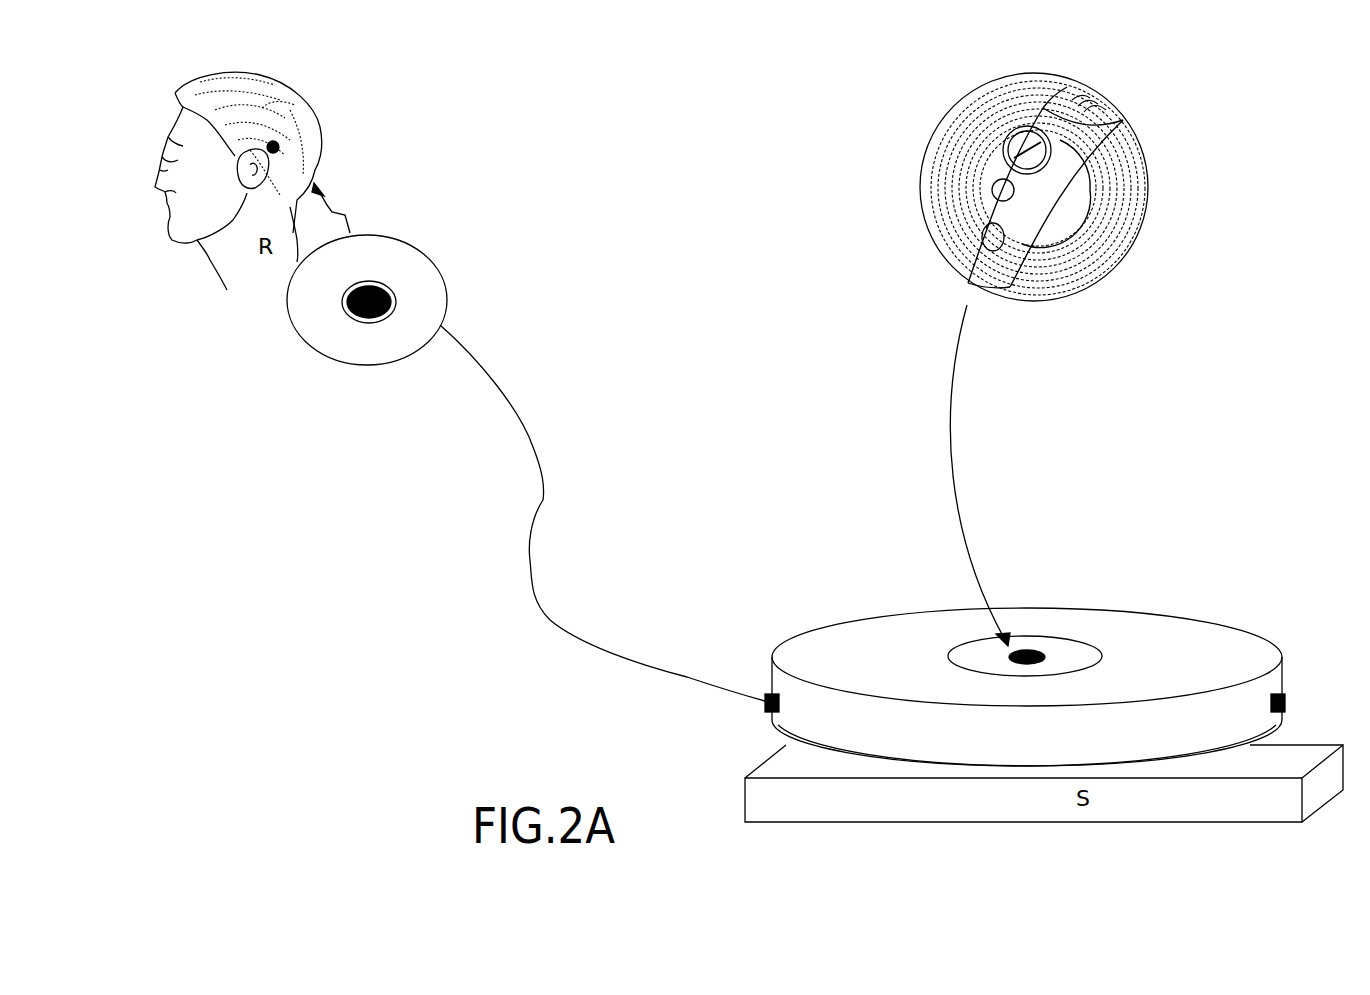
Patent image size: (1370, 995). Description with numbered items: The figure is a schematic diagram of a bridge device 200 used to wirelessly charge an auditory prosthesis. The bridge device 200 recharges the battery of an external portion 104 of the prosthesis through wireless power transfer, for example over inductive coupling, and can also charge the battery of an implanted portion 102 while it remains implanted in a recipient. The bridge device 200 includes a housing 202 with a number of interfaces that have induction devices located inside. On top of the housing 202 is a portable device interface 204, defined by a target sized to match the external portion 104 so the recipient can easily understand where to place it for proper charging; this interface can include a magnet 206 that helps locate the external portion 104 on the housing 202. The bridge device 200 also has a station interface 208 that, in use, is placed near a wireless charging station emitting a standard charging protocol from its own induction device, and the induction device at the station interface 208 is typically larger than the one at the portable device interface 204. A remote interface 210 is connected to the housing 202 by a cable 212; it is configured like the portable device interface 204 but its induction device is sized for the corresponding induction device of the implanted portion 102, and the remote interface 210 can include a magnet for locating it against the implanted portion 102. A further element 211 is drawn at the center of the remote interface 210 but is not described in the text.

The implanted portion 102 is at (273, 147).
The external portion 104 is at (1137, 93).
The bridge device 200 is at (737, 208).
The housing 202 is at (1252, 693).
The portable device interface 204 is at (1082, 653).
The magnet 206 is at (1027, 650).
The station interface 208 is at (1183, 760).
The remote interface 210 is at (350, 365).
The earpiece transducer 211 is at (385, 290).
The cable 212 is at (543, 500).